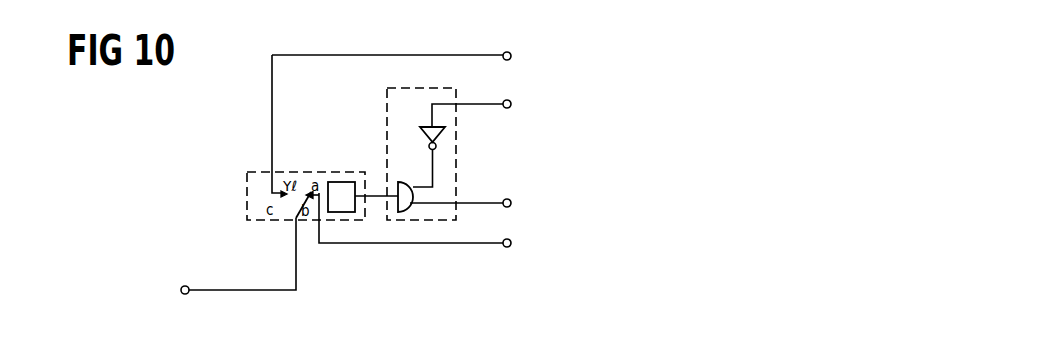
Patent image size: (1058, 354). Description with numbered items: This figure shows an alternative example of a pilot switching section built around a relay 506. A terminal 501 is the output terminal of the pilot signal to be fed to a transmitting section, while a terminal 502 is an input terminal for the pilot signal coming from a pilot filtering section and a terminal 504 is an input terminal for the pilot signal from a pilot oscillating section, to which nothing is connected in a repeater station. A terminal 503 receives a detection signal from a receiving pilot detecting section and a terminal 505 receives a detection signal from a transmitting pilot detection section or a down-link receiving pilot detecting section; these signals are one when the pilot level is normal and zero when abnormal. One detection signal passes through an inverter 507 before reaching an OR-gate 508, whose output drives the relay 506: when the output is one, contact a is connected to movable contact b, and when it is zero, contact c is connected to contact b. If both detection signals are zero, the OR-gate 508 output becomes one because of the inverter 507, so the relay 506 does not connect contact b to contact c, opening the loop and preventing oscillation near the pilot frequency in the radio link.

The terminal 501 is at (185, 286).
The terminal 502 is at (504, 53).
The terminal 503 is at (504, 101).
The terminal 504 is at (504, 240).
The terminal 505 is at (504, 200).
The relay 506 is at (334, 182).
The inverter 507 is at (426, 127).
The OR-gate 508 is at (398, 182).